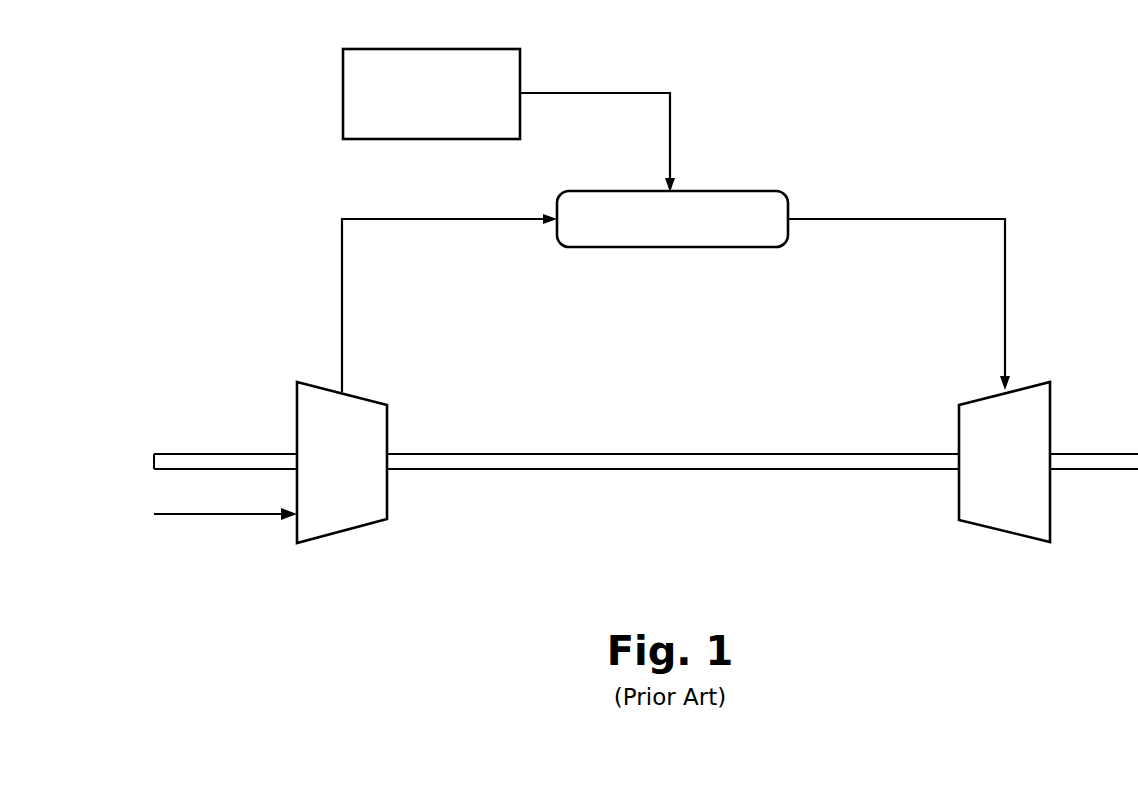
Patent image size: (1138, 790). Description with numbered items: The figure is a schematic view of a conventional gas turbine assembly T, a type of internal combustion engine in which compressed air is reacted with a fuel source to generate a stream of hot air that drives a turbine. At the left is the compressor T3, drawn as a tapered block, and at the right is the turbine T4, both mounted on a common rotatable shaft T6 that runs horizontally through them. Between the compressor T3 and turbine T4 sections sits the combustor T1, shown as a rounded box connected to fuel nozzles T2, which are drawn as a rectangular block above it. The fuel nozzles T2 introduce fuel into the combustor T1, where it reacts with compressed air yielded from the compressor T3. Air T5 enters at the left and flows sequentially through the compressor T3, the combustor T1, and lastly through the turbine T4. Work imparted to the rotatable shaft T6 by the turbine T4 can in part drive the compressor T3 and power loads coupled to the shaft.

The combustor T1 is at (657, 233).
The fuel nozzles T2 is at (414, 108).
The compressor T3 is at (326, 474).
The turbine T4 is at (989, 474).
The air T5 is at (222, 514).
The rotatable shaft T6 is at (808, 453).
The gas turbine assembly T is at (560, 568).